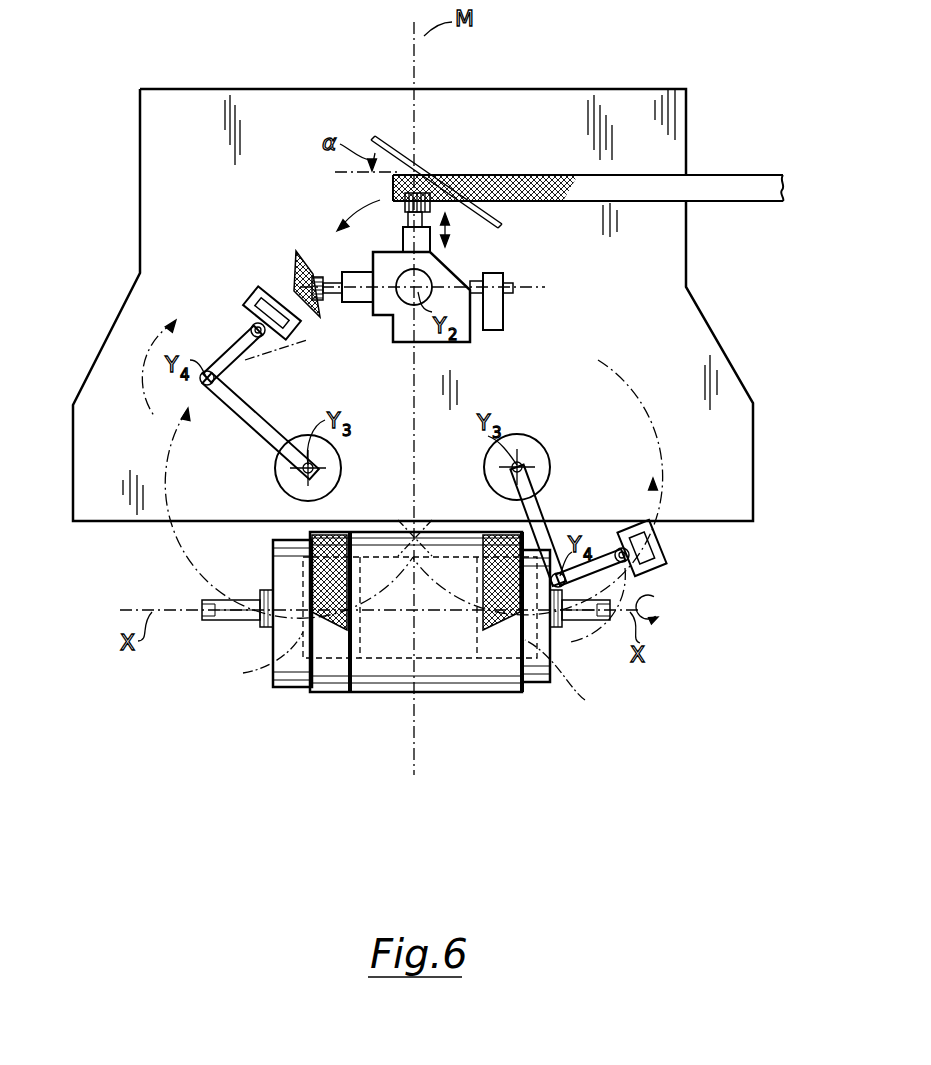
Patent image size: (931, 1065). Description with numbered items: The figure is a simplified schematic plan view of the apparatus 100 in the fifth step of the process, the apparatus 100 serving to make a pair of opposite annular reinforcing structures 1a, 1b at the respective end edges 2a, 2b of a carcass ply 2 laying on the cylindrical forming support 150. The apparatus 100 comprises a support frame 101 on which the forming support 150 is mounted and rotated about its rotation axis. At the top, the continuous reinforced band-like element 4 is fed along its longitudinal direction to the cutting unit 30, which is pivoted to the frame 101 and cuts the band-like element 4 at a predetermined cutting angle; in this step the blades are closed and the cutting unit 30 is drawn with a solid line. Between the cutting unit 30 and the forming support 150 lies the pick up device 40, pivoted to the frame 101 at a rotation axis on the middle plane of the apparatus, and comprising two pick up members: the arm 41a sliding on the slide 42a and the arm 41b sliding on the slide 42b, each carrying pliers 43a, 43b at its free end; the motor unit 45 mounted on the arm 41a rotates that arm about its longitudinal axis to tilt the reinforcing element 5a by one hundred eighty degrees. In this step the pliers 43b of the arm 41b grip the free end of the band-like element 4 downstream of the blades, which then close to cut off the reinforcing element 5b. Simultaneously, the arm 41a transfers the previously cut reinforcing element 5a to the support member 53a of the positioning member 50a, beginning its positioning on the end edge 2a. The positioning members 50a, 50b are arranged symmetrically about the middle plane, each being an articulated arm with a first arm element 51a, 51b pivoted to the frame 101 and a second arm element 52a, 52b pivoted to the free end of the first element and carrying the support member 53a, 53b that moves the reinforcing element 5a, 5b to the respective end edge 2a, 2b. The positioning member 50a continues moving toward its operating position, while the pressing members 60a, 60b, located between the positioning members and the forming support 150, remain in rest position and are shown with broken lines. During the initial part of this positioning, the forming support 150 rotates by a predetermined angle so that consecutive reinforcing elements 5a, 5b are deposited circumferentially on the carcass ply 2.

The apparatus 100 is at (101, 184).
The support frame 101 is at (258, 105).
The continuous reinforced band-like element 4 is at (740, 186).
The cutting unit 30 is at (383, 132).
The pliers 43b is at (407, 197).
The arm 41b is at (404, 218).
The slide 42b is at (422, 240).
The pick up device 40 is at (445, 348).
The motor unit 45 is at (493, 320).
The slide 42a is at (357, 302).
The arm 41a is at (340, 300).
The pliers 43a is at (318, 265).
The reinforcing element 5a is at (294, 260).
The reinforcing element 5b is at (487, 562).
The first arm element 51a is at (247, 413).
The second arm element 52a is at (233, 343).
The support member 53a is at (258, 298).
The positioning member 50a is at (256, 448).
The first arm element 51b is at (548, 500).
The second arm element 52b is at (632, 575).
The support member 53b is at (655, 528).
The positioning member 50b is at (603, 507).
The cylindrical forming support 150 is at (434, 703).
The end edge 2a is at (286, 703).
The annular reinforcing structure 1a is at (333, 692).
The carcass ply 2 is at (387, 692).
The annular reinforcing structure 1b is at (500, 692).
The end edge 2b is at (540, 703).
The pressing member 60a is at (250, 663).
The pressing member 60b is at (579, 679).